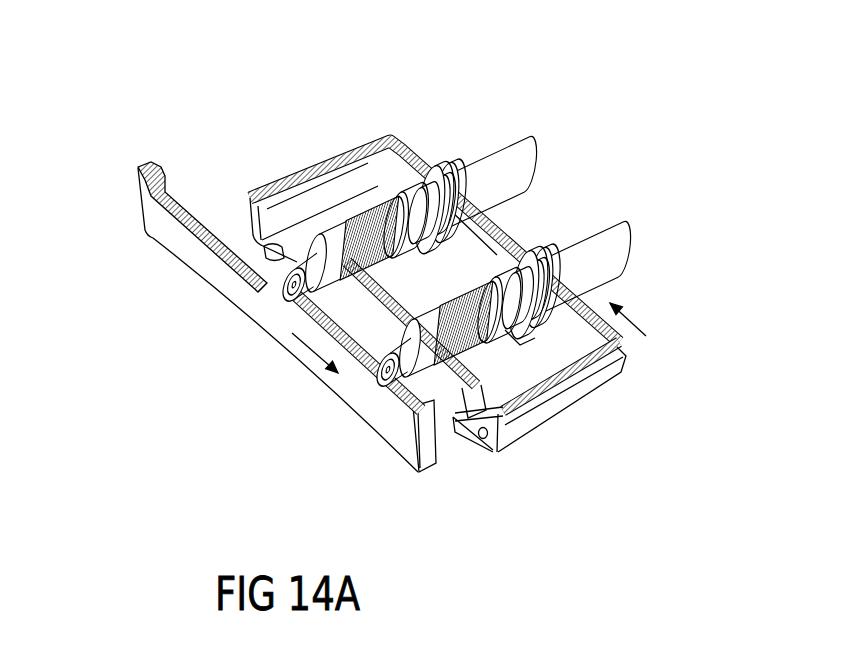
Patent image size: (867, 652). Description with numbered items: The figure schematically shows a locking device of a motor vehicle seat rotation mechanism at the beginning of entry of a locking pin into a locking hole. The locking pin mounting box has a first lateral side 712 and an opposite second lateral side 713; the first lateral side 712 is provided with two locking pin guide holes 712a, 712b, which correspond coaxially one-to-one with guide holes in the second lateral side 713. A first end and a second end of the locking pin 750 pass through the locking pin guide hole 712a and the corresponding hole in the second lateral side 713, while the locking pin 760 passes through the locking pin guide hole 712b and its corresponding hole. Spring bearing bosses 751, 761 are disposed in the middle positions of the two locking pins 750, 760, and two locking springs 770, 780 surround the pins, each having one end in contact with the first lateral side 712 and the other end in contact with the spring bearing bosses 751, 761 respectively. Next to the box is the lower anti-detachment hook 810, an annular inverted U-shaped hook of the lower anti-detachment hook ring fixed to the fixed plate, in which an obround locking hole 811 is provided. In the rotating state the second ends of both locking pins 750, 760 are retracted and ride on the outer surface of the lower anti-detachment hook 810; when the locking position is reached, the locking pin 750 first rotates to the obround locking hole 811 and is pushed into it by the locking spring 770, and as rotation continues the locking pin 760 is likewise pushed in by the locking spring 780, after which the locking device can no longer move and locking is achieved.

The first lateral side 712 is at (447, 395).
The locking pin guide hole 712a is at (268, 258).
The locking pin guide hole 712b is at (347, 367).
The second lateral side 713 is at (582, 335).
The locking pin 750 is at (282, 292).
The spring bearing boss 751 is at (380, 194).
The locking pin 760 is at (598, 253).
The spring bearing boss 761 is at (517, 345).
The locking spring 770 is at (405, 146).
The locking spring 780 is at (553, 263).
The lower anti-detachment hook 810 is at (193, 263).
The obround locking hole 811 is at (186, 205).